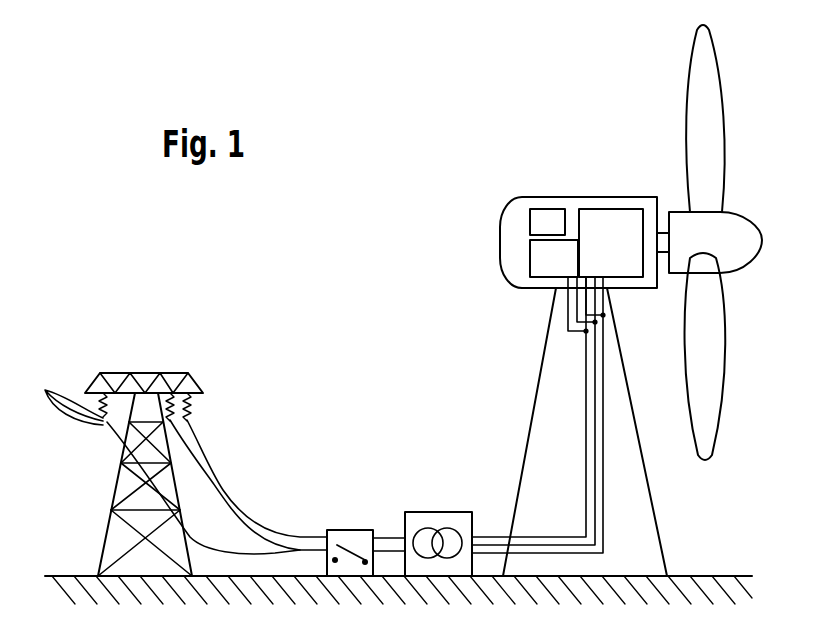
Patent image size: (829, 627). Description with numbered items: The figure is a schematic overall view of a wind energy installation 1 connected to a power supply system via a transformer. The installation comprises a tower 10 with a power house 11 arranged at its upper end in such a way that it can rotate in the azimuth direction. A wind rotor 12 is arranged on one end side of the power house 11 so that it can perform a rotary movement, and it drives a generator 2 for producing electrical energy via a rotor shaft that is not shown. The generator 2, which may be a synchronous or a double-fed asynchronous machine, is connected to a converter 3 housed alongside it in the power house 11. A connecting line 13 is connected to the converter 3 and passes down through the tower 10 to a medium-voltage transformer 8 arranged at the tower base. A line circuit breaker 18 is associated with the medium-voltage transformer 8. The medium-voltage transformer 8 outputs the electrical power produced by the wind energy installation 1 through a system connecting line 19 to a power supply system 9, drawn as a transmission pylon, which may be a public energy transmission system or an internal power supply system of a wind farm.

The wind energy installation 1 is at (433, 192).
The generator 2 is at (613, 215).
The converter 3 is at (549, 275).
The medium-voltage transformer 8 is at (440, 512).
The power supply system 9 is at (148, 338).
The tower 10 is at (535, 389).
The power house 11 is at (503, 212).
The wind rotor 12 is at (710, 63).
The connecting line 13 is at (603, 392).
The line circuit breaker 18 is at (353, 528).
The system connecting line 19 is at (262, 515).